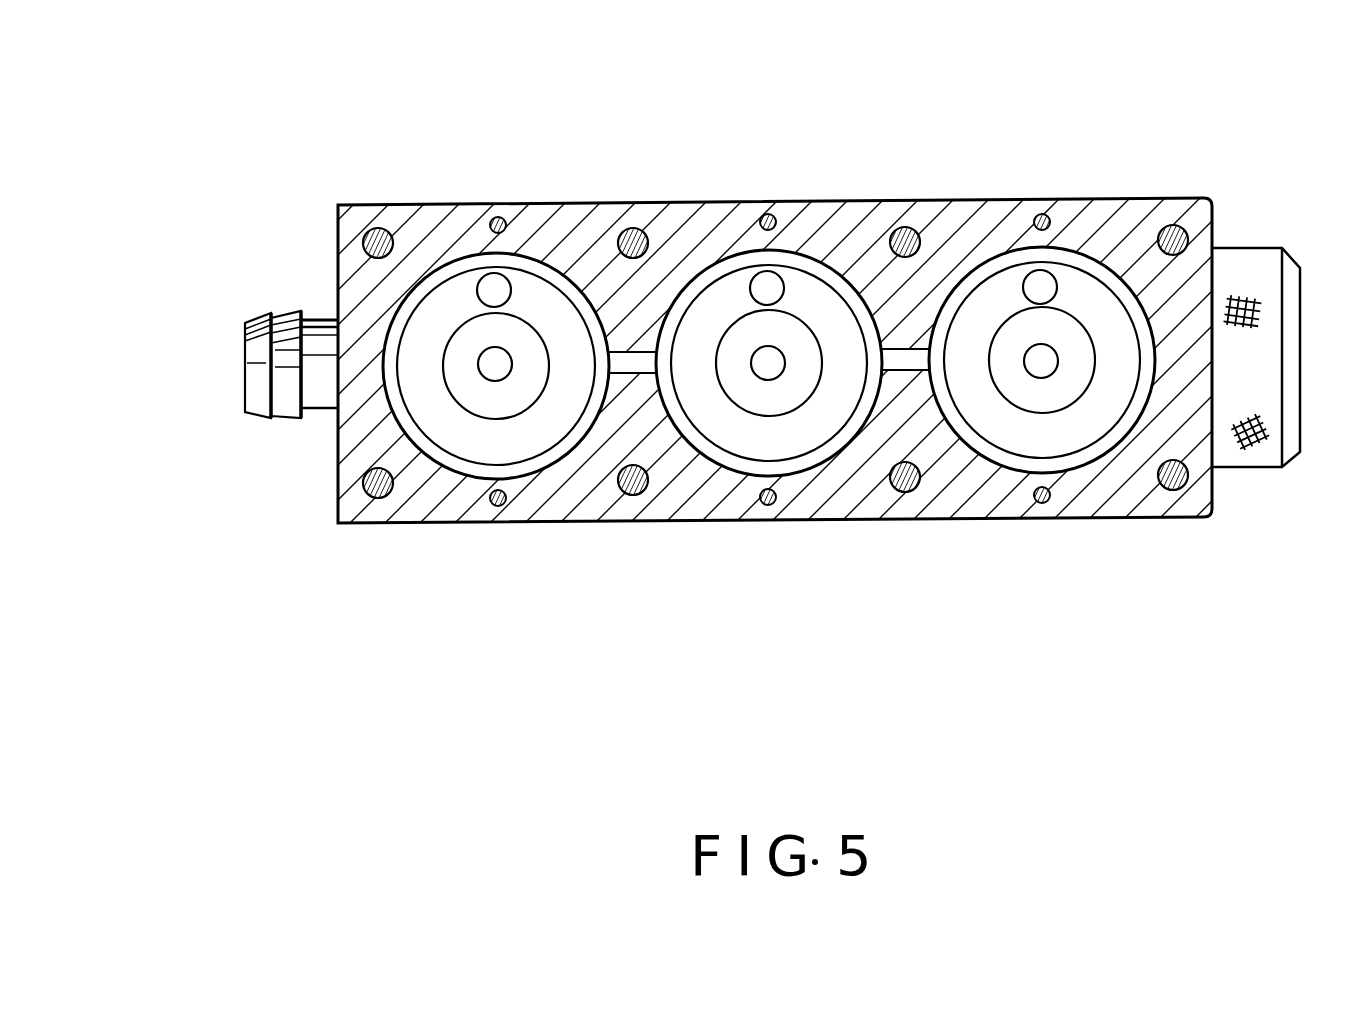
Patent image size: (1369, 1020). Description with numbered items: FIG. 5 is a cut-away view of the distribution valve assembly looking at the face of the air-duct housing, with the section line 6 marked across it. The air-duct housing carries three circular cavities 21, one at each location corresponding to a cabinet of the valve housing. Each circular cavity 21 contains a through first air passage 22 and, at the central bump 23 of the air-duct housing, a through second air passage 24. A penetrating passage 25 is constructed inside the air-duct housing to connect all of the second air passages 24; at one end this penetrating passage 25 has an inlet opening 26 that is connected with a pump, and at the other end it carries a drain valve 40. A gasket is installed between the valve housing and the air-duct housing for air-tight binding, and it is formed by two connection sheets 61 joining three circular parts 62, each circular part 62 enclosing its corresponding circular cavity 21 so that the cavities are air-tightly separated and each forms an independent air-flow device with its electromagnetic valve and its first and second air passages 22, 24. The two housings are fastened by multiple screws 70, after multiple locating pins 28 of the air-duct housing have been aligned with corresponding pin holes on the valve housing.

The circular cavity 21 is at (448, 437).
The first air passage 22 is at (770, 283).
The central bump 23 is at (1068, 332).
The second air passage 24 is at (773, 368).
The penetrating passage 25 is at (316, 295).
The inlet opening 26 is at (262, 363).
The locating pin 28 is at (500, 214).
The drain valve 40 is at (1303, 240).
The connection sheet 61 is at (915, 357).
The circular part 62 is at (1088, 457).
The screw 70 is at (377, 230).
The section line 6- 6 is at (632, 196).